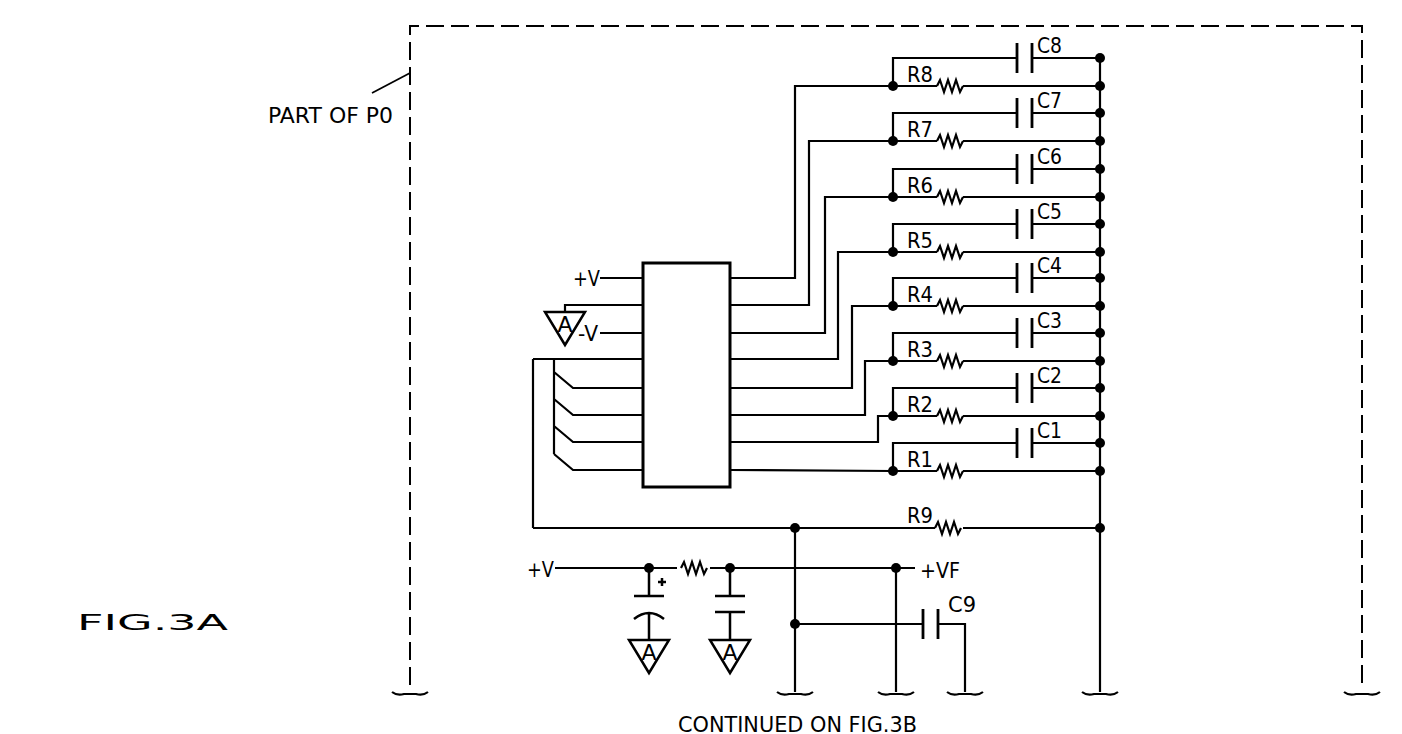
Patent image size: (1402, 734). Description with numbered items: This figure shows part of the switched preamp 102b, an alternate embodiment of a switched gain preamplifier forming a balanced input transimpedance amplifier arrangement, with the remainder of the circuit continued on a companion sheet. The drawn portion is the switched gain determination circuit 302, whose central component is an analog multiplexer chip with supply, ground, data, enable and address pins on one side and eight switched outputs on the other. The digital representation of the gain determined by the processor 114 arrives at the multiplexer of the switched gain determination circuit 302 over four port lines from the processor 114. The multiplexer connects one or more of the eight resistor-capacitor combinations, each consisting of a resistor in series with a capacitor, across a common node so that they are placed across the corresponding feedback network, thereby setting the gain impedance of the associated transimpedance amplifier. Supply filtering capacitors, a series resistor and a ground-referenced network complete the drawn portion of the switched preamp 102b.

The switched preamp 102b is at (520, 70).
The switched gain determination circuit 302 is at (690, 252).
The processor 114 is at (555, 359).